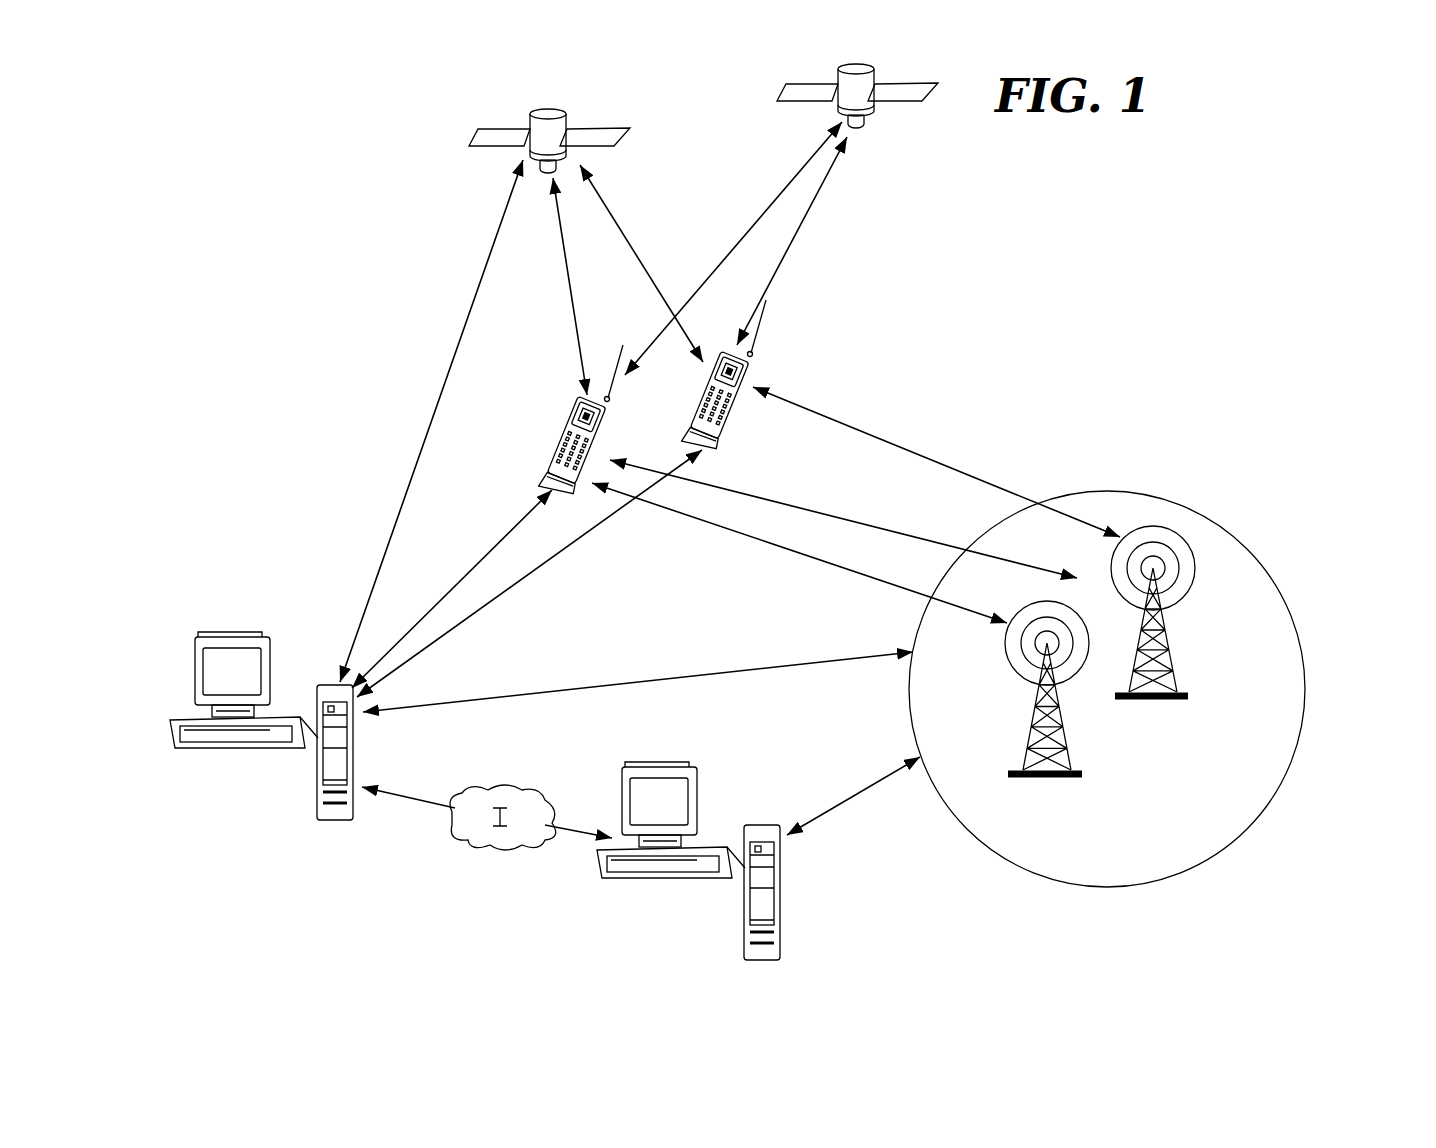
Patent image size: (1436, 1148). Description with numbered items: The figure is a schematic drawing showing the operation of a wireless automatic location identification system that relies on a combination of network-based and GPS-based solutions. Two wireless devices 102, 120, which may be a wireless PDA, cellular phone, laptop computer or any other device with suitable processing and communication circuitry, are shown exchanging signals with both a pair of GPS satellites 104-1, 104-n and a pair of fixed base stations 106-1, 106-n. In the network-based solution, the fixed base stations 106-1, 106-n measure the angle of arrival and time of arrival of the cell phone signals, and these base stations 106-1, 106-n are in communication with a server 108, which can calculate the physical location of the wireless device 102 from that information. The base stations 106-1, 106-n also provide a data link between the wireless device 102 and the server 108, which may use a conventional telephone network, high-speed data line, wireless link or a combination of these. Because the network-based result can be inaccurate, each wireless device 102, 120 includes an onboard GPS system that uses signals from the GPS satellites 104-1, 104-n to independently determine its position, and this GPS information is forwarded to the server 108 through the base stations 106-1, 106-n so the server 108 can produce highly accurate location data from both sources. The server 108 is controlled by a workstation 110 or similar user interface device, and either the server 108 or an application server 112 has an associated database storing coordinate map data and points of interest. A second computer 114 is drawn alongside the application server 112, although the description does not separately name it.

The wireless device 102 is at (556, 456).
The GPS satellite 104-1 is at (568, 124).
The GPS satellite 104-n is at (878, 112).
The fixed base station 106-1 is at (1176, 655).
The fixed base station 106-n is at (1066, 733).
The server 108 is at (353, 763).
The workstation 110 is at (271, 664).
The application server 112 is at (782, 910).
The computer 114 is at (702, 805).
The wireless device 120 is at (757, 352).